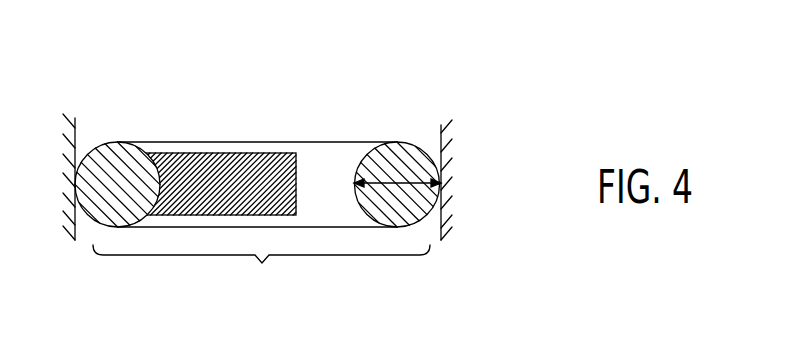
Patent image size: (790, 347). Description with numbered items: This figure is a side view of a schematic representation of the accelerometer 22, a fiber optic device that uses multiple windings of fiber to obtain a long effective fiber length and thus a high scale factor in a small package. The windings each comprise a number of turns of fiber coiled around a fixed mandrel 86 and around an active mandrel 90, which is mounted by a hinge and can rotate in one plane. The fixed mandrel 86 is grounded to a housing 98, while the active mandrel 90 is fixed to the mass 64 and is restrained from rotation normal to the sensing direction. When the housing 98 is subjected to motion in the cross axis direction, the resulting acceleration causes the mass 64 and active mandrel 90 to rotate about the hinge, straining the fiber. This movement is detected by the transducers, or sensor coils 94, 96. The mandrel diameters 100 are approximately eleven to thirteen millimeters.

The accelerometer 22 is at (225, 75).
The mass 64 is at (227, 155).
The active mandrel 90 is at (113, 152).
The fixed mandrel 86 is at (393, 141).
The housing 98 is at (446, 163).
The mandrel diameter 100 is at (397, 184).
The sensor coil 94 is at (261, 274).
The sensor coil 96 is at (261, 274).